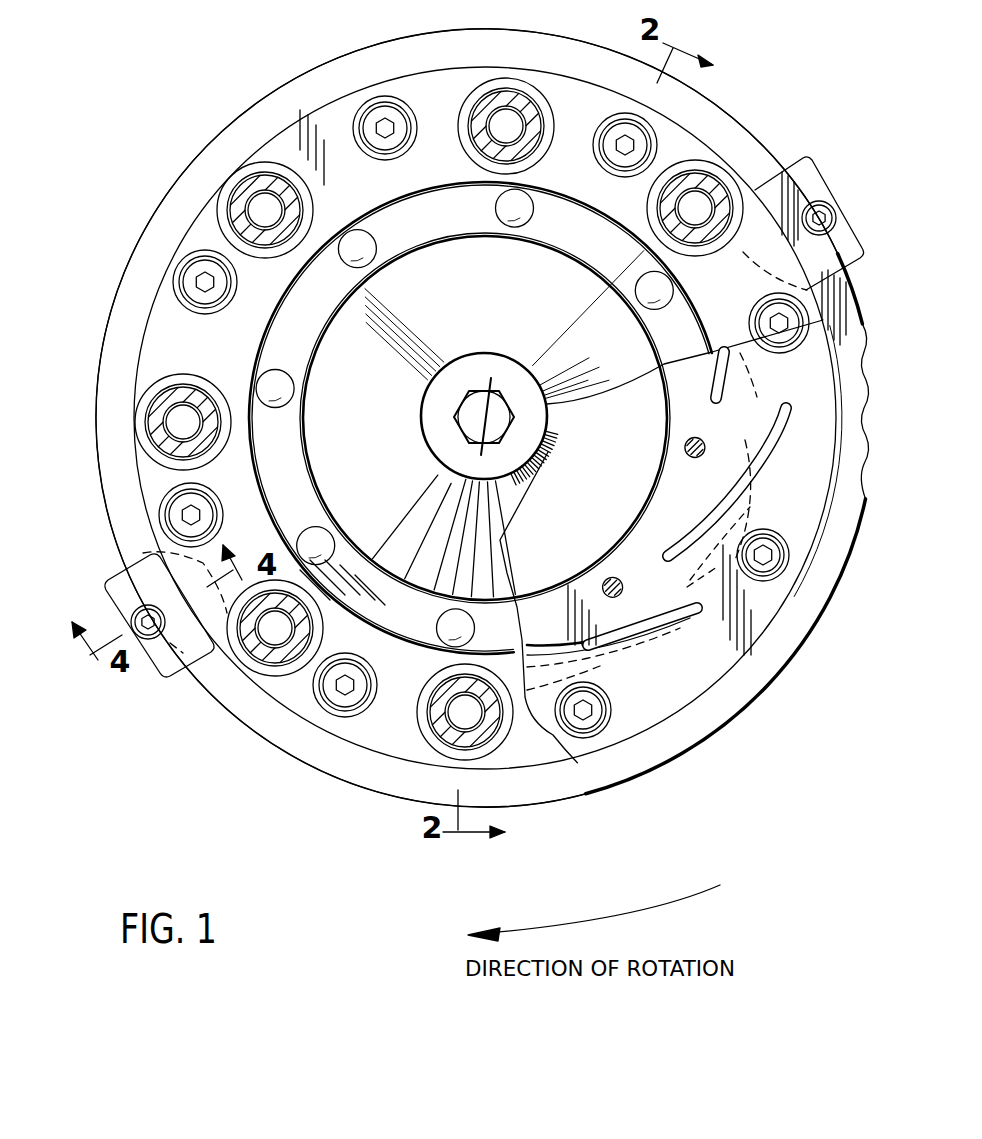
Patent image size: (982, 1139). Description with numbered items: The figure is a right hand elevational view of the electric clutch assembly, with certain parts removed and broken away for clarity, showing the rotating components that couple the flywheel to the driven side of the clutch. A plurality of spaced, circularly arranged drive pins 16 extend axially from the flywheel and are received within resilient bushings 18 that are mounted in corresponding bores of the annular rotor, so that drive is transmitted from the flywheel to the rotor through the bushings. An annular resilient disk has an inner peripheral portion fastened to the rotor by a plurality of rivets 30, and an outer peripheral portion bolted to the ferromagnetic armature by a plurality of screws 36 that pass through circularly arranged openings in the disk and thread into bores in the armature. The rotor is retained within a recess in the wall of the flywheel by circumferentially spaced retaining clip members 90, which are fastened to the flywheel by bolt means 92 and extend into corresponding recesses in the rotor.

The drive pins 16 is at (506, 126).
The resilient bushings 18 is at (548, 173).
The rivets 30 is at (350, 258).
The screws 36 is at (622, 152).
The retaining clip members 90 is at (805, 159).
The bolt means 92 is at (826, 212).